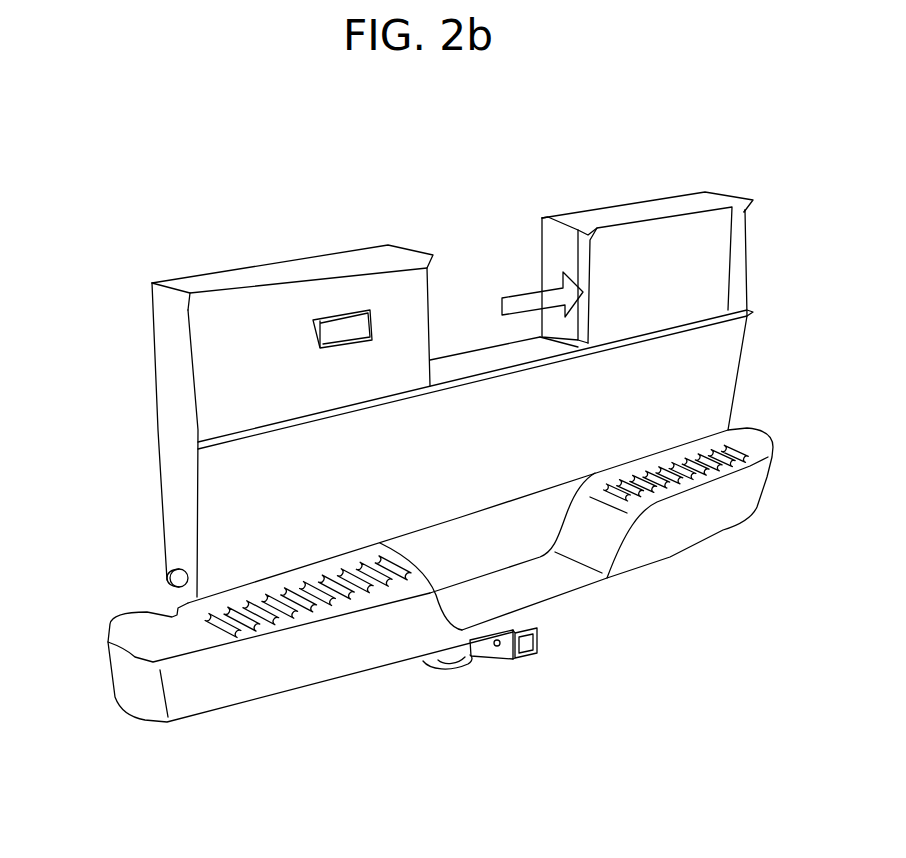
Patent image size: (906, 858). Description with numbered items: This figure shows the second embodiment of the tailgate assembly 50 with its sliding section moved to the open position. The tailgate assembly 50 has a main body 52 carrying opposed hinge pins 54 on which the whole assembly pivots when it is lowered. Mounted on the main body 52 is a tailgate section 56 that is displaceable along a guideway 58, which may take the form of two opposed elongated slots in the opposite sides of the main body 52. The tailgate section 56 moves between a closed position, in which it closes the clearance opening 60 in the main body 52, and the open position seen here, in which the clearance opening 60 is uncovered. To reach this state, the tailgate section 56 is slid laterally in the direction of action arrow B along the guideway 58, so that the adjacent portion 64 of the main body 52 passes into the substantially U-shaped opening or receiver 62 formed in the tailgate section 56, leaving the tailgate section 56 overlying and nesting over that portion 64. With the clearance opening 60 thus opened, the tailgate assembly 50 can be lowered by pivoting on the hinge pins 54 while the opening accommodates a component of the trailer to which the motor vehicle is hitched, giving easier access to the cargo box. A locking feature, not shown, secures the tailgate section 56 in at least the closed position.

The tailgate assembly 50 is at (260, 190).
The main body 52 is at (248, 487).
The hinge pins 54 is at (166, 583).
The tailgate section 56 is at (642, 212).
The guideway 58 is at (650, 337).
The clearance opening 60 is at (465, 302).
The receiver 62 is at (567, 230).
The portion of the main body 64 is at (558, 328).
The action arrow B is at (530, 297).